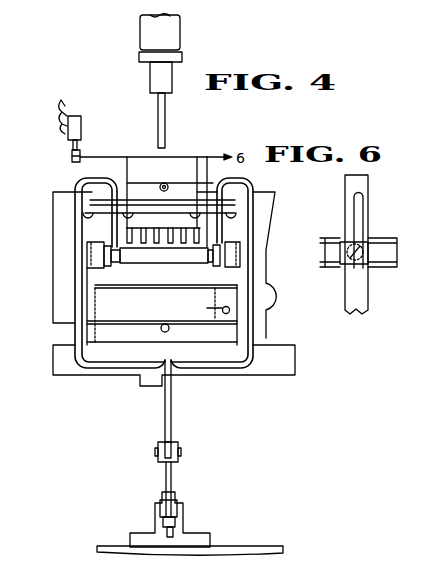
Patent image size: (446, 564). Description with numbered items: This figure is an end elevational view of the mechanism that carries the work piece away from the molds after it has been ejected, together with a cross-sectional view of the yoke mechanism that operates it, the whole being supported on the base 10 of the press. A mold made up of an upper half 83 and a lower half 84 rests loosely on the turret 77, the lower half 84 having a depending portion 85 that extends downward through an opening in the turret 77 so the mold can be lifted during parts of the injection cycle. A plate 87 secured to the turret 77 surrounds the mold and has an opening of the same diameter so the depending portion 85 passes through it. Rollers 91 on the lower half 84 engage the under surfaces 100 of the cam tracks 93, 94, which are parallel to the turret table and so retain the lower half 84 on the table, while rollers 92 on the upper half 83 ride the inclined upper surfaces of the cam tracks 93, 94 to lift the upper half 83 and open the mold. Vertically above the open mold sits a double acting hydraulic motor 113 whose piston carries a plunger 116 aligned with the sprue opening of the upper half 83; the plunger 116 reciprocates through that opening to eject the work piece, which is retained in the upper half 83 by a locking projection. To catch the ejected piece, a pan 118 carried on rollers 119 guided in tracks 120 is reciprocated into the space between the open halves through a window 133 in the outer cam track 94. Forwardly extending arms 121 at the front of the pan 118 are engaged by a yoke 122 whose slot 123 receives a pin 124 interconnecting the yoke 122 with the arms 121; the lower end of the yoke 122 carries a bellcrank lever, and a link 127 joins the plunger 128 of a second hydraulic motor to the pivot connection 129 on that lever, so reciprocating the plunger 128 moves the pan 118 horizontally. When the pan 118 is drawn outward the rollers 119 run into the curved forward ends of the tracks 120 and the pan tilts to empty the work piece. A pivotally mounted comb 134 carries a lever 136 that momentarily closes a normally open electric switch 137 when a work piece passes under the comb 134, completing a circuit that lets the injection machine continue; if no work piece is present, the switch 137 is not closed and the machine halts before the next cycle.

In FIG. 4, the base plate 10 is at (251, 545).
In FIG. 4, the turret 77 is at (297, 362).
In FIG. 4, the upper half 83 is at (141, 185).
In FIG. 4, the lower half 84 is at (220, 277).
In FIG. 4, the depending portion 85 is at (192, 383).
In FIG. 4, the plate 87 is at (230, 343).
In FIG. 4, the rollers 91 is at (170, 328).
In FIG. 4, the rollers 92 is at (165, 183).
In FIG. 4, the cam track 93 is at (266, 250).
In FIG. 4, the cam track 94 is at (53, 304).
In FIG. 4, the under surfaces 100 is at (66, 327).
In FIG. 4, the hydraulic motor 113 is at (176, 35).
In FIG. 4, the plunger 116 is at (166, 127).
In FIG. 4, the pan 118 is at (152, 264).
In FIG. 4, the rollers 119 is at (216, 247).
In FIG. 6, the rollers 119 is at (344, 275).
In FIG. 4, the tracks 120 is at (96, 269).
In FIG. 6, the tracks 120 is at (393, 266).
In FIG. 6, the arms 121 is at (396, 252).
In FIG. 4, the yoke 122 is at (263, 311).
In FIG. 6, the yoke 122 is at (366, 182).
In FIG. 6, the slot 123 is at (362, 207).
In FIG. 6, the pin 124 is at (360, 246).
In FIG. 4, the link 127 is at (173, 477).
In FIG. 4, the plunger 128 is at (174, 532).
In FIG. 4, the pivot connection 129 is at (179, 449).
In FIG. 4, the window 133 is at (89, 216).
In FIG. 4, the comb 134 is at (162, 227).
In FIG. 4, the lever 136 is at (72, 157).
In FIG. 4, the electric switch 137 is at (81, 130).